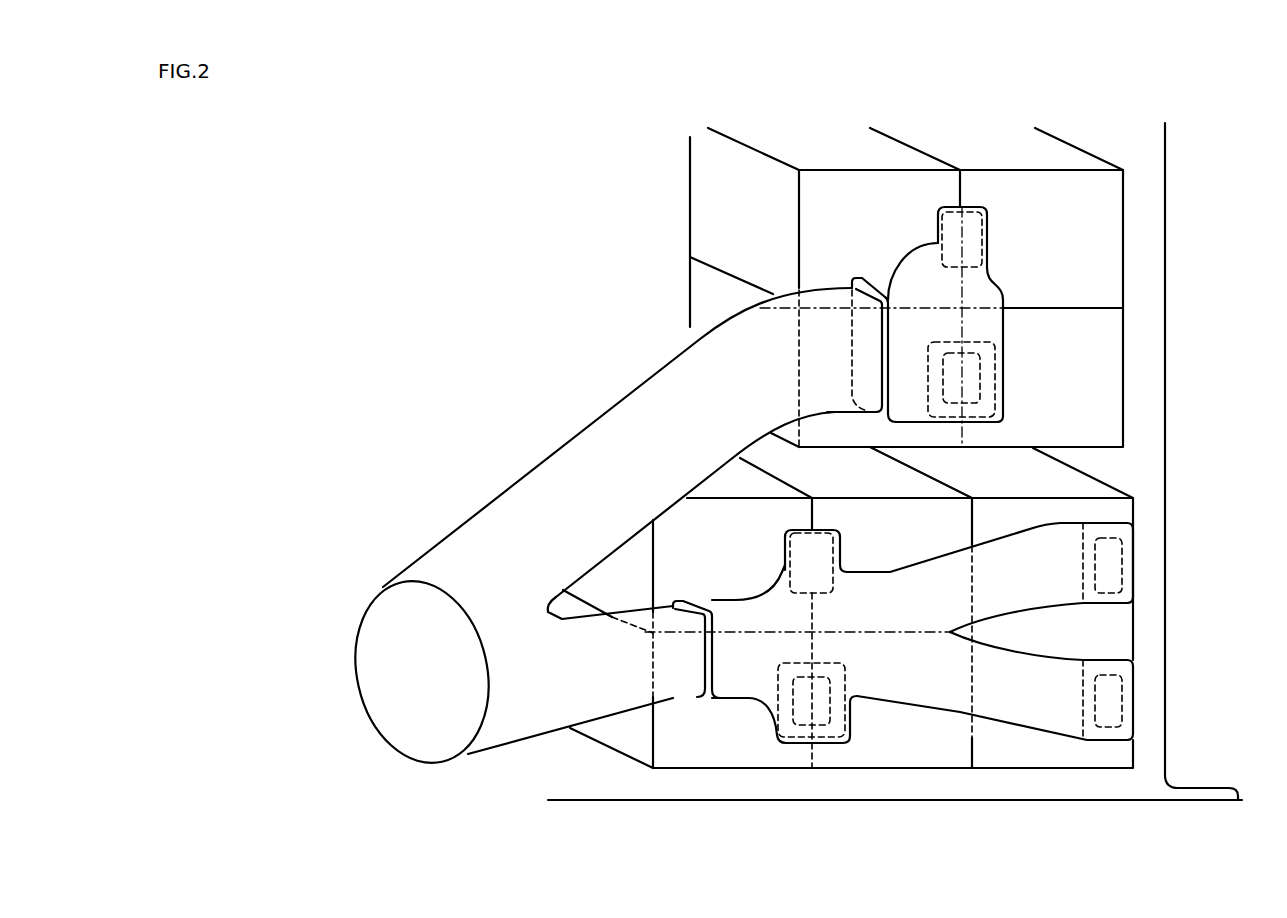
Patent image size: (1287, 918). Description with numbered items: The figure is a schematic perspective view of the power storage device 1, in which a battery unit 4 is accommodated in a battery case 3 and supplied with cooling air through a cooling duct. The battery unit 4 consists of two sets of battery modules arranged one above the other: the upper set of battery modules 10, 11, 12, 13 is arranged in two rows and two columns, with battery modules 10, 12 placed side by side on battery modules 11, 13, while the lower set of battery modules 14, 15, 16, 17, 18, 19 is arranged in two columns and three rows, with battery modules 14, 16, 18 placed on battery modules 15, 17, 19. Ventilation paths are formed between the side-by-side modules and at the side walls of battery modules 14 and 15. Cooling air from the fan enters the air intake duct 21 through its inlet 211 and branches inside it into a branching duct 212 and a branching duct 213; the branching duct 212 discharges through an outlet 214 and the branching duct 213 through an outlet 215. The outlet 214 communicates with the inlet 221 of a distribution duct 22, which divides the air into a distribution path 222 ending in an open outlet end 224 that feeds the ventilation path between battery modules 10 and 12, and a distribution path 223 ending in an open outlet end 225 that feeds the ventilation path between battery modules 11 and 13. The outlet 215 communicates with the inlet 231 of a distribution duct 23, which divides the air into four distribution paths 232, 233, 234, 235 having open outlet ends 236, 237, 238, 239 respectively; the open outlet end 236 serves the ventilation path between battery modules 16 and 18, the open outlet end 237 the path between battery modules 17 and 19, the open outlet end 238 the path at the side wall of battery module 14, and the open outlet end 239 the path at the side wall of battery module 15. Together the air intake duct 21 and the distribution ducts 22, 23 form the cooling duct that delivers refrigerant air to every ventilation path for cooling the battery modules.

The power storage device 1 is at (1214, 110).
The battery case 3 is at (1167, 734).
The battery unit 4 is at (640, 164).
The battery module 10 is at (1107, 244).
The battery module 11 is at (1107, 344).
The battery module 12 is at (843, 200).
The battery module 13 is at (715, 288).
The battery module 14 is at (1108, 510).
The battery module 15 is at (1108, 643).
The battery module 16 is at (910, 515).
The battery module 17 is at (900, 730).
The battery module 18 is at (692, 548).
The battery module 19 is at (722, 730).
The air intake duct 21 is at (412, 546).
The inlet 211 is at (407, 697).
The branching duct 212 is at (590, 458).
The branching duct 213 is at (603, 682).
The outlet 214 is at (872, 360).
The outlet 215 is at (693, 670).
The distribution duct 22 is at (907, 287).
The inlet 221 is at (860, 302).
The distribution path 222 is at (937, 243).
The distribution path 223 is at (997, 398).
The open outlet end 224 is at (968, 233).
The open outlet end 225 is at (975, 382).
The distribution duct 23 is at (740, 683).
The inlet 231 is at (652, 700).
The distribution path 232 is at (780, 558).
The distribution path 233 is at (768, 727).
The distribution path 234 is at (1013, 588).
The distribution path 235 is at (1042, 700).
The open outlet end 236 is at (807, 550).
The open outlet end 237 is at (812, 740).
The open outlet end 238 is at (1120, 563).
The open outlet end 239 is at (1108, 703).